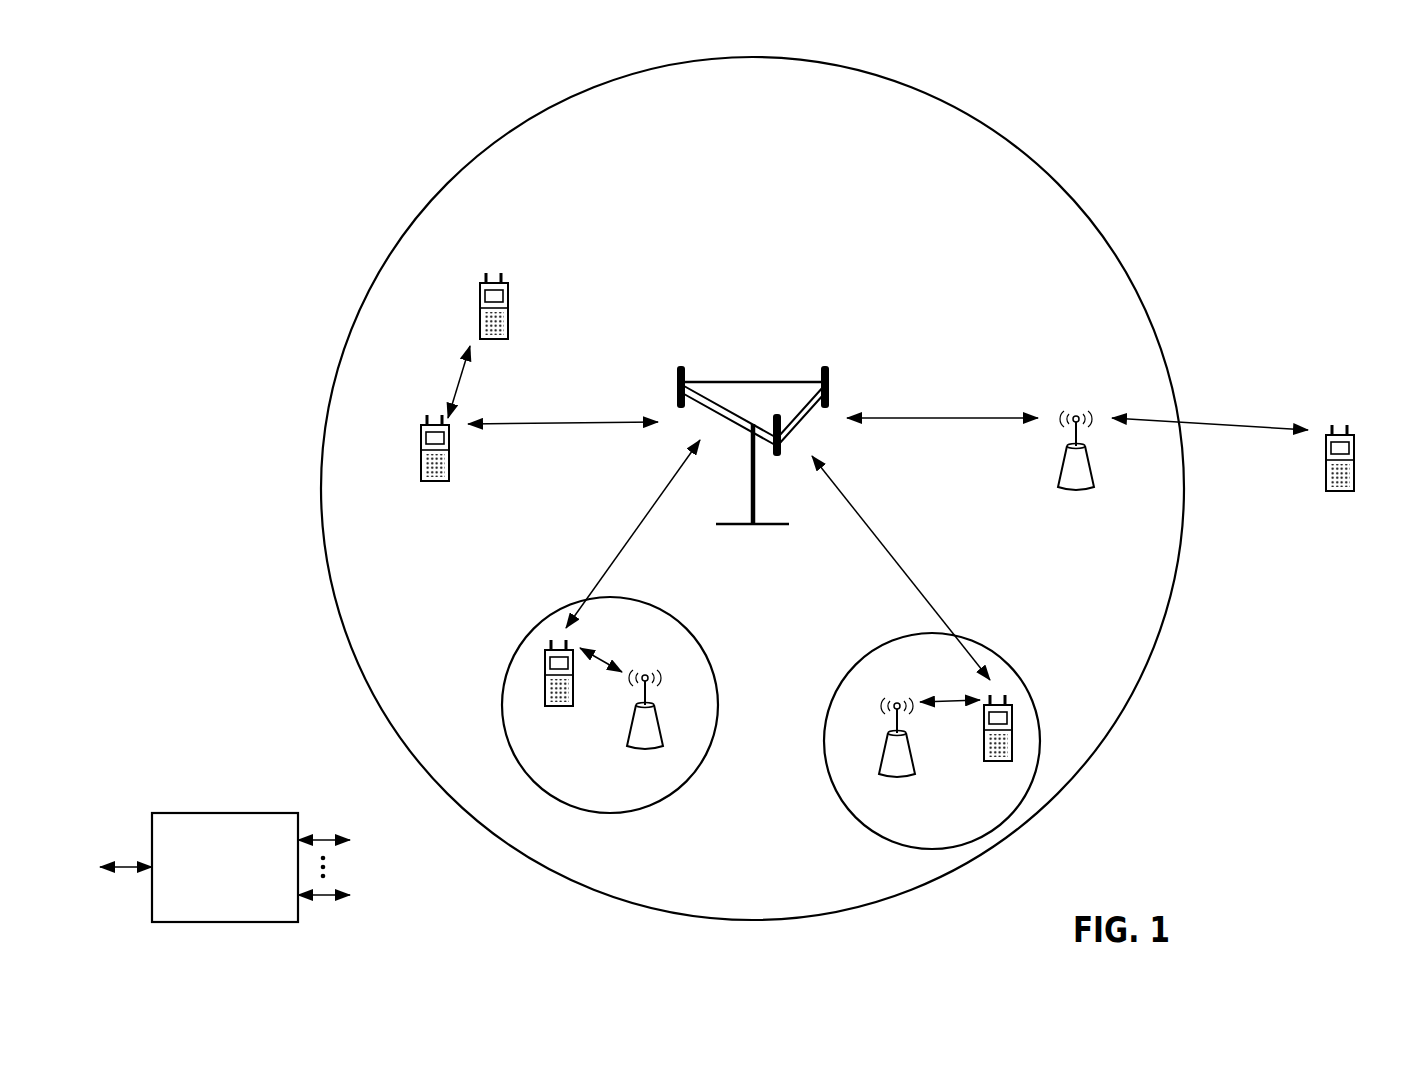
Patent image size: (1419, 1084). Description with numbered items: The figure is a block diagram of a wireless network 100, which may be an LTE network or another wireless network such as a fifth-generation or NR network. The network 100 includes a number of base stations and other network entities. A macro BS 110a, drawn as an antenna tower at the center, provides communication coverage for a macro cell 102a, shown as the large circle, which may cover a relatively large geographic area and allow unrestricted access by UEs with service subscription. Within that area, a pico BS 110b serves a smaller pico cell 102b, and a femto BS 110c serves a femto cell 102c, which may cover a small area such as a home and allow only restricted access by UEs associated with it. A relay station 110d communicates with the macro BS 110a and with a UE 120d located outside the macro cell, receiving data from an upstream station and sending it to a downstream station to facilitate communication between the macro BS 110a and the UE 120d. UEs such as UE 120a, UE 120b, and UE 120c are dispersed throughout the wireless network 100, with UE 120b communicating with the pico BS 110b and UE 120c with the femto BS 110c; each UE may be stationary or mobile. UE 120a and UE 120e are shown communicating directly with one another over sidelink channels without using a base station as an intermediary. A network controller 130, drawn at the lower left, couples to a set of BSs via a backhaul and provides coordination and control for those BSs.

The wireless network 100 is at (1236, 148).
The macro cell 102a is at (1050, 151).
The pico cell 102b is at (690, 634).
The femto cell 102c is at (852, 668).
The macro BS 110a is at (746, 382).
The pico BS 110b is at (662, 733).
The femto BS 110c is at (879, 758).
The relay station 110d is at (1077, 415).
The UE 120a is at (421, 437).
The UE 120b is at (545, 701).
The UE 120c is at (984, 755).
The UE 120d is at (1355, 449).
The UE 120e is at (480, 295).
The network controller 130 is at (222, 813).